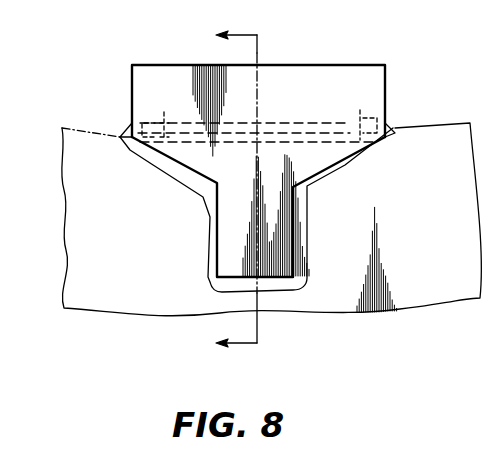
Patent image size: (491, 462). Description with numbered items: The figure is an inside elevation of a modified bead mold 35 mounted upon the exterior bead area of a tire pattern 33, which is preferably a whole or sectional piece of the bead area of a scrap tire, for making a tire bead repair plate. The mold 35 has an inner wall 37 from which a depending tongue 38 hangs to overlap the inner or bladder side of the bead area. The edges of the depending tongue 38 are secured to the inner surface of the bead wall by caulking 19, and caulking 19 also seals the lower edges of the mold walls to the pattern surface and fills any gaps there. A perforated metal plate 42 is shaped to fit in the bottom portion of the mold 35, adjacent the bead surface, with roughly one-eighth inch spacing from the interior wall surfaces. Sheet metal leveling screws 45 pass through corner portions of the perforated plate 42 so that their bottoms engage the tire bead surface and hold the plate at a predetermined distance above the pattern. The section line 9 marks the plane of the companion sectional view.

The section line 9- 9 is at (227, 189).
The caulking 19 is at (170, 167).
The tire pattern 33 is at (423, 216).
The bead mold 35 is at (257, 141).
The inner wall 37 is at (176, 90).
The depending tongue 38 is at (246, 213).
The perforated metal plate 42 is at (313, 120).
The sheet metal leveling screws 45 is at (153, 110).